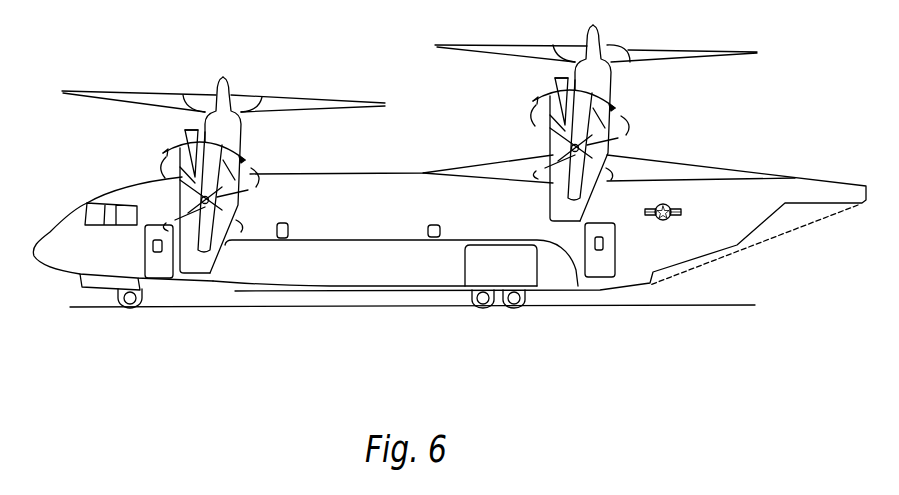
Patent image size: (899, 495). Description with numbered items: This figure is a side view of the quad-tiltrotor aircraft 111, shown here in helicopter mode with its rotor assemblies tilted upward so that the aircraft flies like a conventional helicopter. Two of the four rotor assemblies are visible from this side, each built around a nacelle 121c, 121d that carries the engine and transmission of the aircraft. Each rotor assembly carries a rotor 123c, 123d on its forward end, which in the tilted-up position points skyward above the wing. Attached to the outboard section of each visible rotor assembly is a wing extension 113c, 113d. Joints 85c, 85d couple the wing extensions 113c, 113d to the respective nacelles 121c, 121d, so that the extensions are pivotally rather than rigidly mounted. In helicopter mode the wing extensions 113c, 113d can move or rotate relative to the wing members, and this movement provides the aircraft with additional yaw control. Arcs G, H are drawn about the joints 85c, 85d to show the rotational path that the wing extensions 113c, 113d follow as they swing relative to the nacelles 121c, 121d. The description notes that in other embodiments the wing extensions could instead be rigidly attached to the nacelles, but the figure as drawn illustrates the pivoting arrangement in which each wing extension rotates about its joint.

The quad-tiltrotor aircraft 111 is at (766, 138).
The rotor 123c is at (707, 51).
The rotor 123d is at (325, 100).
The nacelle 121c is at (610, 88).
The nacelle 121d is at (240, 142).
The wing extension 113c is at (622, 119).
The wing extension 113d is at (256, 170).
The joint 85c is at (600, 140).
The joint 85d is at (217, 203).
The arc G is at (185, 130).
The arc H is at (555, 78).